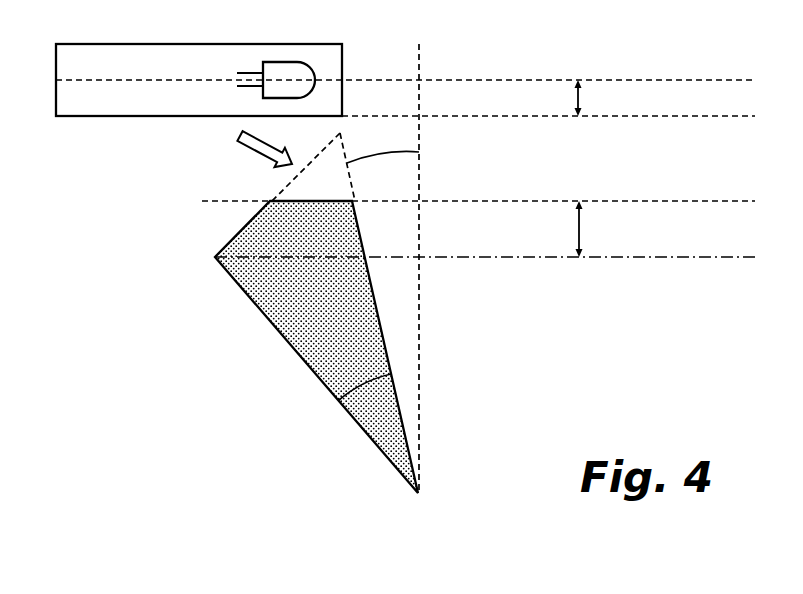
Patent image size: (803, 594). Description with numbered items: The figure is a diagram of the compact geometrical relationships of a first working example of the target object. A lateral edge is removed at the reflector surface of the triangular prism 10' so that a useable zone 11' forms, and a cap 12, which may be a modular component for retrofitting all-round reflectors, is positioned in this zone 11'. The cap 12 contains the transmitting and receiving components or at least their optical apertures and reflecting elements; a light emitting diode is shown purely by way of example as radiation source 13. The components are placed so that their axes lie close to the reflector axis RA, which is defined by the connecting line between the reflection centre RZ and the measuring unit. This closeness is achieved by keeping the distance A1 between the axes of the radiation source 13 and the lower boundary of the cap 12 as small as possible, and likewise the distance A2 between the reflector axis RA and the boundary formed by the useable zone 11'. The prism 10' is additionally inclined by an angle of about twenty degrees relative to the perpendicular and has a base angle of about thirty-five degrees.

The triangular prism 10' is at (370, 347).
The useable zone 11' is at (398, 162).
The cap 12 is at (286, 80).
The radiation source 13 is at (377, 52).
The distance A1 is at (605, 98).
The distance A2 is at (607, 229).
The reflection centre RZ is at (191, 255).
The reflector axis RA is at (713, 280).